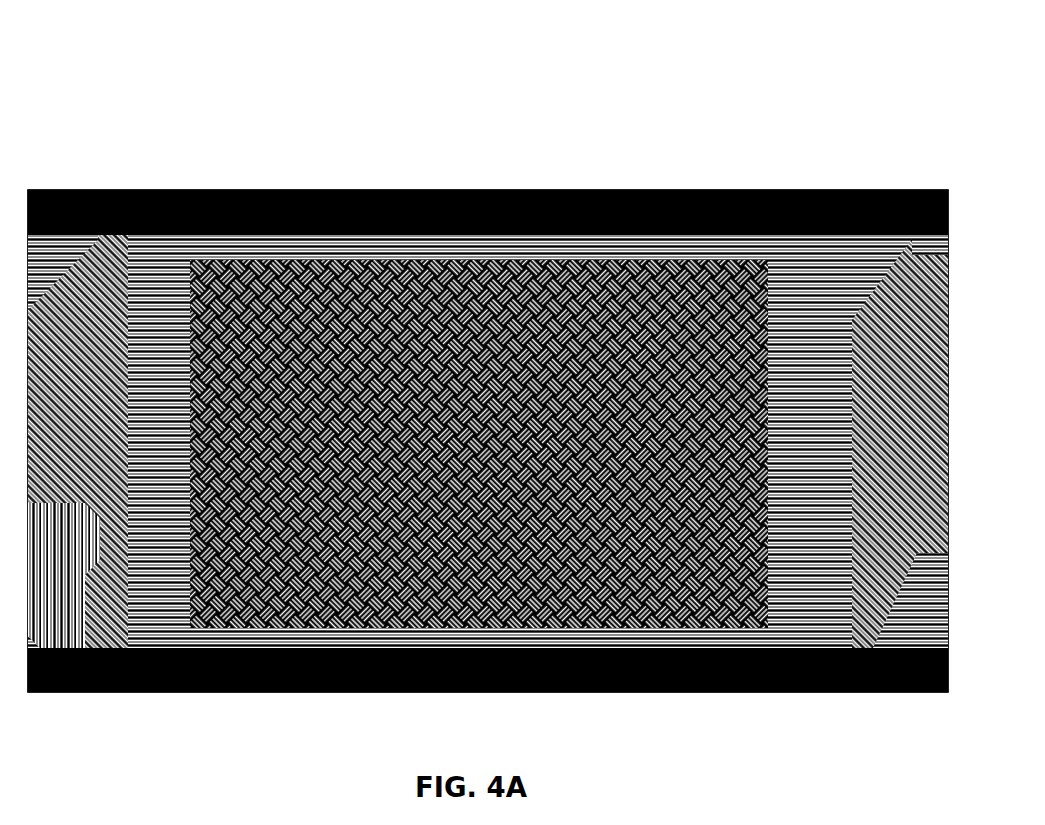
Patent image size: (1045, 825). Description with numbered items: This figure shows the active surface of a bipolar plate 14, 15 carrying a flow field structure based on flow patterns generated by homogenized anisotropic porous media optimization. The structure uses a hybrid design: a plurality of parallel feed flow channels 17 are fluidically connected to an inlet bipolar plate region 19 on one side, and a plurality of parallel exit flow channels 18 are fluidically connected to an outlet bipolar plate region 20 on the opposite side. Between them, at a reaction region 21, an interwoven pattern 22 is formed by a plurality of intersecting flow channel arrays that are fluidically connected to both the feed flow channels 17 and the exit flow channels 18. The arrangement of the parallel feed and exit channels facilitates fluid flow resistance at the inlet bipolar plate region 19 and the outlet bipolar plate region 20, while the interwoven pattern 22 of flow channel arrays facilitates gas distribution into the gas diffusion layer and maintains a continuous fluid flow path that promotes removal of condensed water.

The bipolar plate 14 is at (180, 117).
The bipolar plate 15 is at (180, 117).
The parallel feed flow channels 17 is at (172, 262).
The parallel exit flow channels 18 is at (798, 276).
The inlet bipolar plate region 19 is at (84, 240).
The outlet bipolar plate region 20 is at (905, 268).
The reaction region 21 is at (500, 260).
The interwoven pattern 22 is at (502, 620).